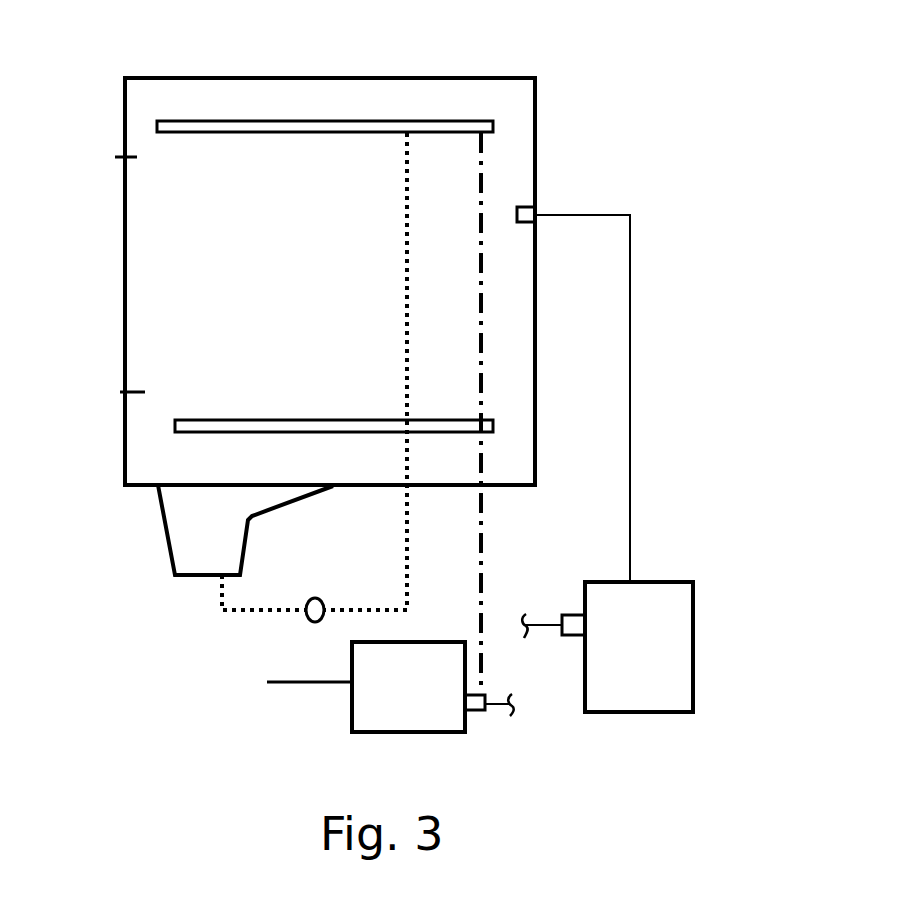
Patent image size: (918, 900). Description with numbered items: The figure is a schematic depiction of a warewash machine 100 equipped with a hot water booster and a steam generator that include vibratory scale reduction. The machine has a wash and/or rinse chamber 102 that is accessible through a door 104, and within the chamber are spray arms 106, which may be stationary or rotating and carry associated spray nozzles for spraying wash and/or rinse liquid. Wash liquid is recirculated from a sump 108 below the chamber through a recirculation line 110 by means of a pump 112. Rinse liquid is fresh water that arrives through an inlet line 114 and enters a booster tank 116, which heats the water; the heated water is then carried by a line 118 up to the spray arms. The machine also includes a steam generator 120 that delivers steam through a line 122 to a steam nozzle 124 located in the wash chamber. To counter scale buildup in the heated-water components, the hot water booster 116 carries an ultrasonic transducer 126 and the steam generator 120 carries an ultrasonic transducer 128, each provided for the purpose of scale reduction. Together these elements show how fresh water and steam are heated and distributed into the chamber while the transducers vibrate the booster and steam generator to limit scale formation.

The warewash machine 100 is at (494, 70).
The wash and/or rinse chamber 102 is at (296, 286).
The door 104 is at (125, 272).
The spray arm 106 is at (283, 118).
The sump 108 is at (200, 545).
The recirculation line 110 is at (264, 612).
The pump 112 is at (313, 598).
The inlet line 114 is at (300, 684).
The booster tank 116 is at (426, 708).
The line 118 is at (485, 562).
The steam generator 120 is at (661, 672).
The line 122 is at (633, 488).
The steam nozzle 124 is at (525, 208).
The ultrasonic transducer 126 is at (477, 712).
The ultrasonic transducer 128 is at (572, 615).